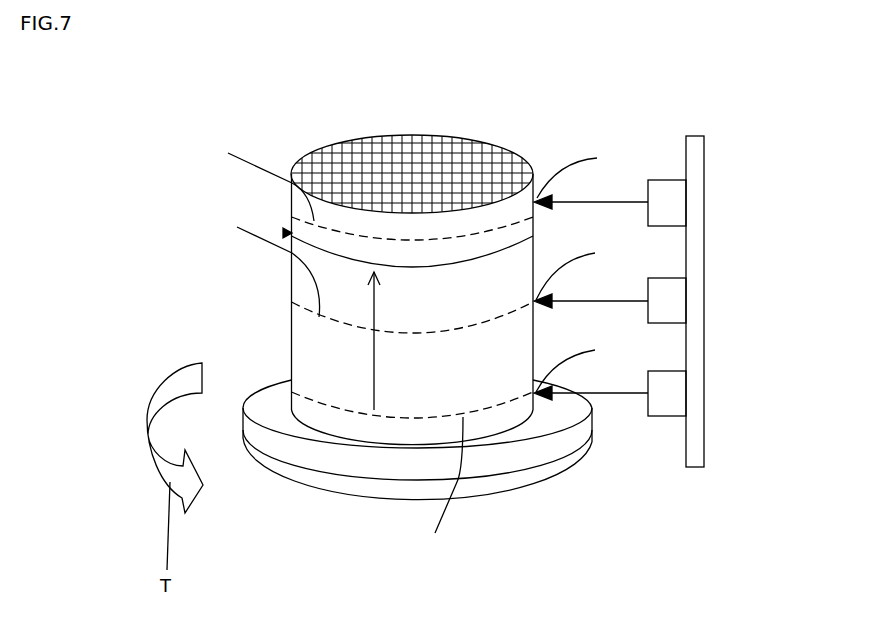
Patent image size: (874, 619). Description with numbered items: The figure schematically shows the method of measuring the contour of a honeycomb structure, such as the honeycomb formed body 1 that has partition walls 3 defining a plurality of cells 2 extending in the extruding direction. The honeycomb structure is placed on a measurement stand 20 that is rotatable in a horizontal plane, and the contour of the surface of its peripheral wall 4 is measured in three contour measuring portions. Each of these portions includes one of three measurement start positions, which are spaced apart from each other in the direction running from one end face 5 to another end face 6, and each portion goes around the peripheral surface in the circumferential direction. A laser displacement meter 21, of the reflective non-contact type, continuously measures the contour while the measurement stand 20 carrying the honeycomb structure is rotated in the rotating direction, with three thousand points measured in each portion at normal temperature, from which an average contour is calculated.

The honeycomb formed body 1 is at (352, 313).
The cells 2 is at (447, 160).
The partition walls 3 is at (387, 167).
The peripheral wall 4 is at (312, 370).
The one end face 5 is at (383, 447).
The another end face 6 is at (339, 140).
The measurement stand 20 is at (517, 490).
The laser displacement meter 21 is at (696, 202).